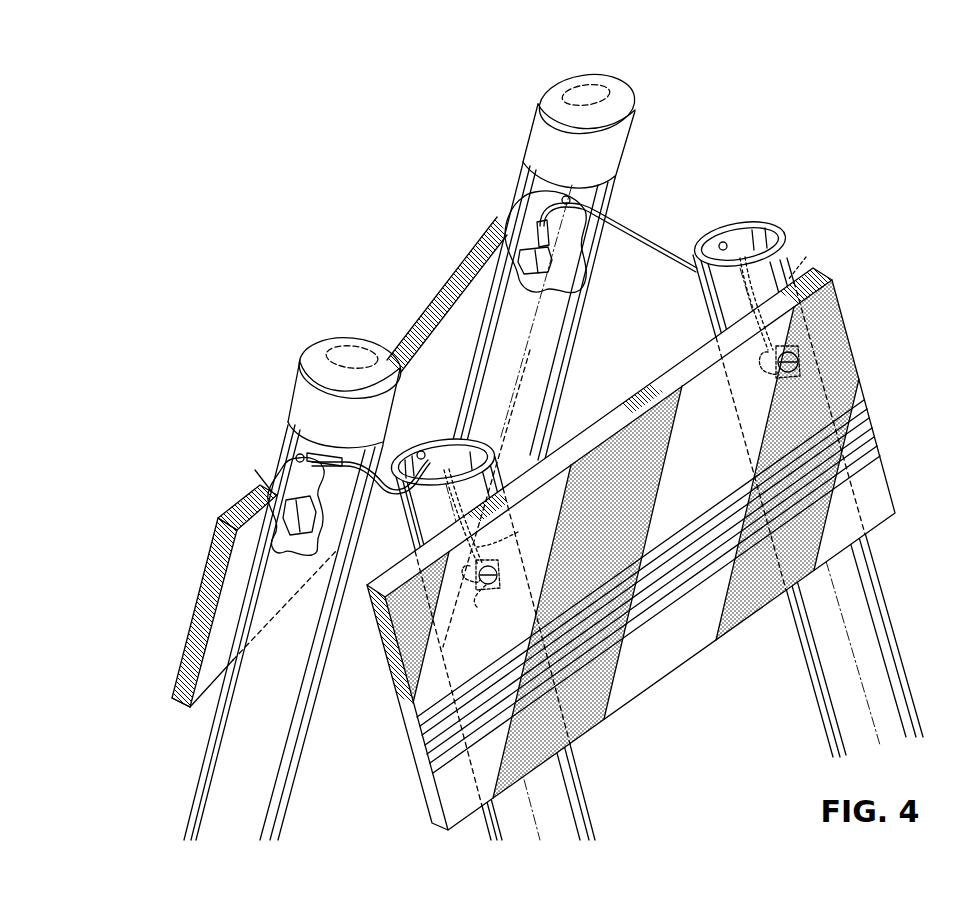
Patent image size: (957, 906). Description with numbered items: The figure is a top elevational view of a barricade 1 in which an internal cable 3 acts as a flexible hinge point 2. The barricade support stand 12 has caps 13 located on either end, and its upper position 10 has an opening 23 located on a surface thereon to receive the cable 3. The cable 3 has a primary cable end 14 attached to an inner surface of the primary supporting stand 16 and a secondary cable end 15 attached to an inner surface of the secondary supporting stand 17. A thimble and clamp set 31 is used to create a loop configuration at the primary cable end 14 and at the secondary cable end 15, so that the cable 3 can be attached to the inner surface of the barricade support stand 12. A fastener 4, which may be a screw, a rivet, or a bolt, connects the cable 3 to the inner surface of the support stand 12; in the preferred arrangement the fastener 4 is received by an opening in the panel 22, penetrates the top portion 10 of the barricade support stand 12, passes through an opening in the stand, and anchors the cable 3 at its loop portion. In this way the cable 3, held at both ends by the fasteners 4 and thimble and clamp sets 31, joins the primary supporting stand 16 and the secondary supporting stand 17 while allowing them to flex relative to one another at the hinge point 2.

The barricade 1 is at (203, 283).
The flexible hinge point 2 is at (630, 259).
The internal cable 3 is at (648, 240).
The fastener 4 is at (292, 556).
The upper position 10 is at (241, 601).
The barricade support stand 12 is at (280, 563).
The caps 13 is at (302, 357).
The primary cable end 14 is at (275, 488).
The secondary cable end 15 is at (486, 498).
The primary supporting stand 16 is at (210, 718).
The secondary supporting stand 17 is at (577, 783).
The panel 22 is at (880, 450).
The opening 23 is at (300, 455).
The thimble and clamp set 31 is at (533, 401).